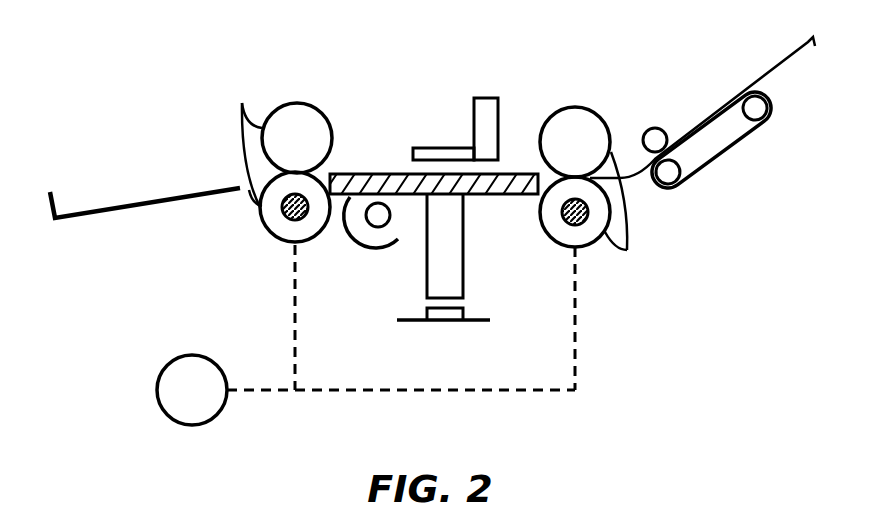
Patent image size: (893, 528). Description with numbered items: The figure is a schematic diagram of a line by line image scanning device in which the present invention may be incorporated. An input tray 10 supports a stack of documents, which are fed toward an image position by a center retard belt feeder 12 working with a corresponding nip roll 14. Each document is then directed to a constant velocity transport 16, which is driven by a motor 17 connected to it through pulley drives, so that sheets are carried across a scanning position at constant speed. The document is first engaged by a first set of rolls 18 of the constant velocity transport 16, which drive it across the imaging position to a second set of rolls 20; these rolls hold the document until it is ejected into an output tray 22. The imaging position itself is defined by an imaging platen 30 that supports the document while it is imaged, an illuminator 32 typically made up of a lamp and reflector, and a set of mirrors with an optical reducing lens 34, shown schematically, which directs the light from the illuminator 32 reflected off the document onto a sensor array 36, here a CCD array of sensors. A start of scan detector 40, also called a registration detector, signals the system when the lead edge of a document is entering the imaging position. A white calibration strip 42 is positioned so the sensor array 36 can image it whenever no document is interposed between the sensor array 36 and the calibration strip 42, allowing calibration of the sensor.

The input tray 10 is at (763, 78).
The center retard belt feeder 12 is at (727, 148).
The nip roll 14 is at (655, 128).
The constant velocity transport 16 is at (292, 82).
The motor 17 is at (192, 352).
The first set of rolls 18 is at (622, 216).
The second set of rolls 20 is at (246, 142).
The output tray 22 is at (115, 210).
The imaging platen 30 is at (477, 195).
The illuminator 32 is at (337, 252).
The optical reducing lens 34 is at (465, 223).
The sensor array 36 is at (443, 320).
The start of scan detector 40 is at (488, 98).
The white calibration strip 42 is at (423, 148).